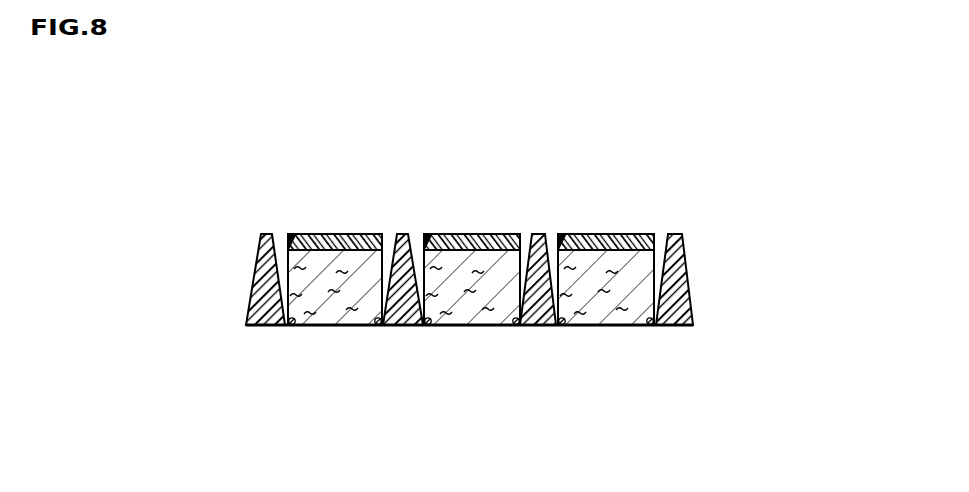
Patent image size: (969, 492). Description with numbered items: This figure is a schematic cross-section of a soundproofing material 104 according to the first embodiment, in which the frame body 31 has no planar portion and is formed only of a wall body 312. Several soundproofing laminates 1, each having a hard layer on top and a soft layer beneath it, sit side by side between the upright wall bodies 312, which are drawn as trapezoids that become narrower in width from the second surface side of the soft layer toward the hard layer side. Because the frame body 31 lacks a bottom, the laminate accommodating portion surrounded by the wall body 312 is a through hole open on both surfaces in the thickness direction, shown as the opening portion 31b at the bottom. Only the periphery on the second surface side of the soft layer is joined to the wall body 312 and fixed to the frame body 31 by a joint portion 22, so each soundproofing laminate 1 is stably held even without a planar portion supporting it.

The soundproofing material 104 is at (609, 144).
The soundproofing laminate 1 is at (497, 226).
The joint portion 22 is at (512, 328).
The frame body 31 is at (683, 265).
The wall body 312 is at (401, 287).
The opening portion 31b is at (608, 333).